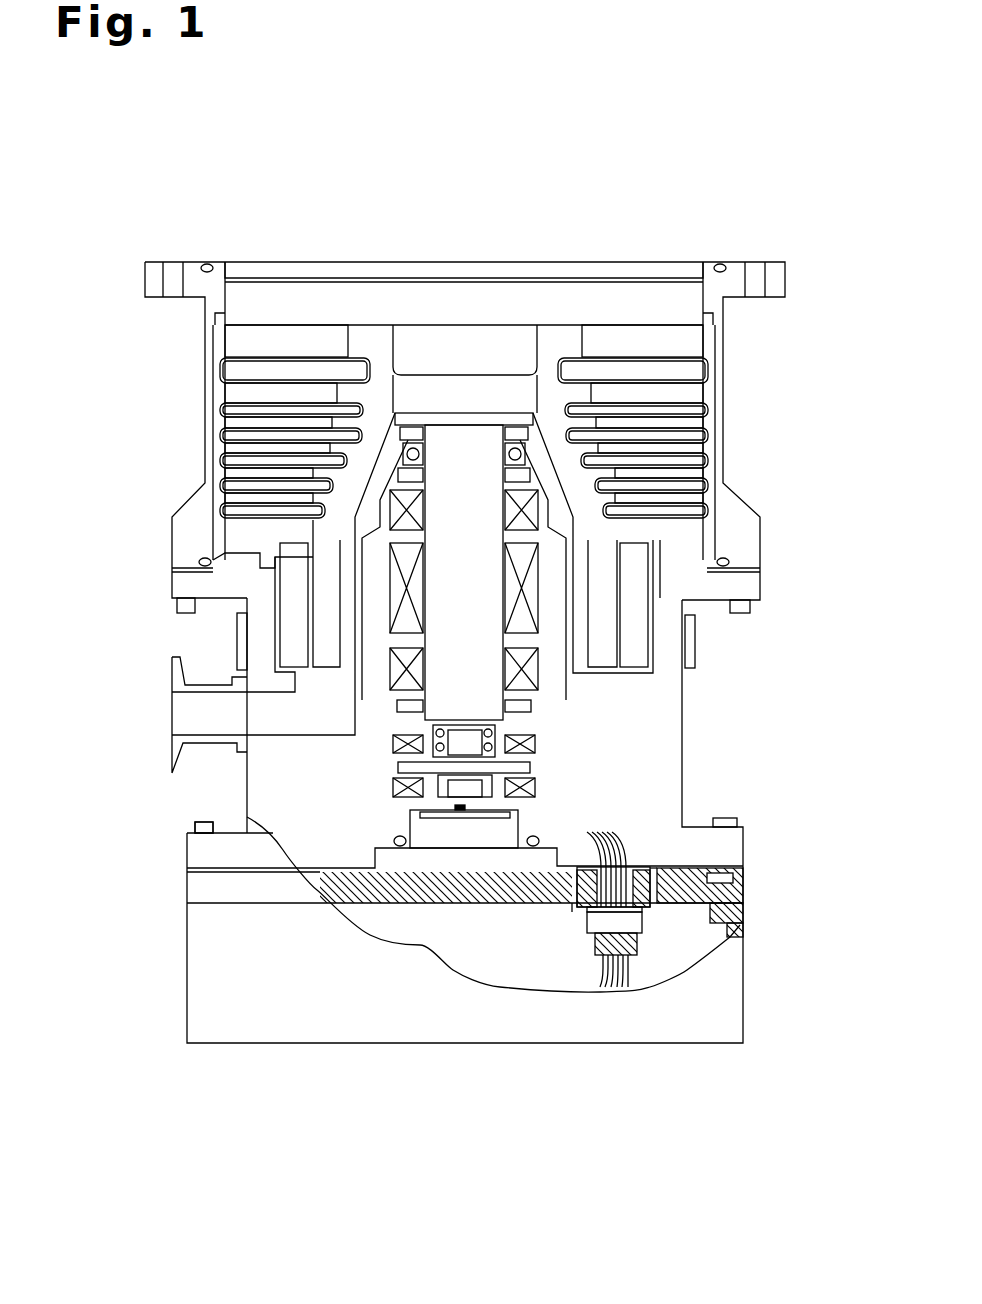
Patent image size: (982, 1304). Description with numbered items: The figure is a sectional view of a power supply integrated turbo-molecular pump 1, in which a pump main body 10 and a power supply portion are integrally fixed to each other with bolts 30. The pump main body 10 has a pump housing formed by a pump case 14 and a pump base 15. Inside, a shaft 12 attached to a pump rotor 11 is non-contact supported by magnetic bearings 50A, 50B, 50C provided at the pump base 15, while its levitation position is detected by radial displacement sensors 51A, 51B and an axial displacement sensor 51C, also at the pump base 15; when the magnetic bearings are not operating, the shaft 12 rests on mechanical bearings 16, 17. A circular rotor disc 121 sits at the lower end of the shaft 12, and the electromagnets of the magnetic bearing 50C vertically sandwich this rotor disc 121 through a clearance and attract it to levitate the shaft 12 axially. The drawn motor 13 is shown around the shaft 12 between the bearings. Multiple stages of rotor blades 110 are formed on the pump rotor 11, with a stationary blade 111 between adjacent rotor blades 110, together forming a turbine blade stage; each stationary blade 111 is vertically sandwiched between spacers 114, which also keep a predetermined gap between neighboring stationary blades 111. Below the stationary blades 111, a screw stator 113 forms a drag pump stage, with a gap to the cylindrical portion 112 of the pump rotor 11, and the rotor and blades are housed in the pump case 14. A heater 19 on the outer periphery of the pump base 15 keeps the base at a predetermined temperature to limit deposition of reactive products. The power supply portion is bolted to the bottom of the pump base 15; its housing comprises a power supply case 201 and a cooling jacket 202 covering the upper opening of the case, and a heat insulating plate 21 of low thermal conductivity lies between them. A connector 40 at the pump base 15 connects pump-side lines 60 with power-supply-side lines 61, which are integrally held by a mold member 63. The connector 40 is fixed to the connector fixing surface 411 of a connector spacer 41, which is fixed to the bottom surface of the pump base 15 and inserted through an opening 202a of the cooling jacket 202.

The power supply integrated turbo-molecular pump 1 is at (482, 170).
The pump main body 10 is at (820, 262).
The pump rotor 11 is at (551, 330).
The shaft 12 is at (467, 437).
The motor 13 is at (392, 587).
The pump case 14 is at (725, 458).
The pump base 15 is at (684, 715).
The mechanical bearing 16 is at (397, 452).
The mechanical bearing 17 is at (493, 734).
The heater 19 is at (697, 660).
The heat insulating plate 21 is at (197, 871).
The bolt 30 is at (197, 822).
The connector 40 is at (597, 925).
The connector spacer 41 is at (648, 908).
The pump-side line 60 is at (617, 833).
The power-supply-side line 61 is at (632, 950).
The mold member 63 is at (597, 950).
The rotor blade 110 is at (690, 340).
The stationary blade 111 is at (693, 368).
The cylindrical portion 112 is at (330, 618).
The screw stator 113 is at (294, 645).
The spacer 114 is at (707, 424).
The rotor disc 121 is at (405, 767).
The power supply case 201 is at (738, 1008).
The cooling jacket 202 is at (740, 893).
The opening 202a is at (640, 868).
The connector fixing surface 411 is at (565, 918).
The magnetic bearing 50A is at (397, 512).
The magnetic bearing 50B is at (533, 667).
The magnetic bearing 50C is at (538, 786).
The radial displacement sensor 51A is at (397, 477).
The radial displacement sensor 51B is at (410, 706).
The axial displacement sensor 51C is at (460, 808).